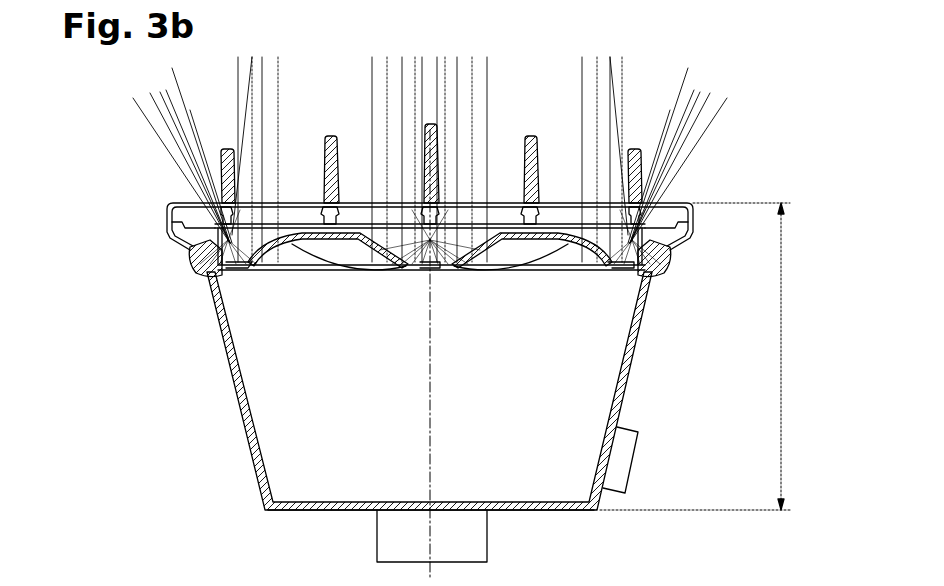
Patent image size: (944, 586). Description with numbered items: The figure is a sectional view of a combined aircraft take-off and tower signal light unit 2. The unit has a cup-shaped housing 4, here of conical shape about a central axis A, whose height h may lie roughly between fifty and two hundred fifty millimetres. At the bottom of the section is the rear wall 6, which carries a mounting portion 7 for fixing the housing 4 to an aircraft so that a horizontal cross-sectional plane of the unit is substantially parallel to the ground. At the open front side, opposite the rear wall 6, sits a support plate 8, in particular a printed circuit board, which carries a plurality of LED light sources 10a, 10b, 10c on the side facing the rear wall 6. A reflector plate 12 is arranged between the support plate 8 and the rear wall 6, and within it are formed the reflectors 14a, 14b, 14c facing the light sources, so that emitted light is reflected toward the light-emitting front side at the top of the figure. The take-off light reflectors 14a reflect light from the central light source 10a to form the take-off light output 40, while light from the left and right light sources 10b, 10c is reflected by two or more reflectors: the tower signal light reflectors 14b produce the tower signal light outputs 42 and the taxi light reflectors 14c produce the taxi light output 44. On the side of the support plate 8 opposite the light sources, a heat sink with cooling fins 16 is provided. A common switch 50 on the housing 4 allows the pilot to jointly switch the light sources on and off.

The combined aircraft take-off and tower signal light unit 2 is at (812, 67).
The housing 4 is at (236, 464).
The rear wall 6 is at (306, 512).
The mounting portion 7 is at (489, 560).
The support plate 8 is at (508, 200).
The light source 10a is at (430, 272).
The light source 10b is at (246, 272).
The light source 10c is at (656, 272).
The reflector plate 12 is at (376, 282).
The take-off light reflector 14a is at (480, 272).
The tower signal light reflector 14b is at (186, 252).
The taxi light reflector 14c is at (292, 272).
The cooling fins 16 is at (222, 138).
The take-off light output 40 is at (460, 46).
The tower signal light output 42 is at (136, 132).
The taxi light output 44 is at (262, 46).
The common switch 50 is at (634, 461).
The axis A is at (428, 410).
The height h is at (704, 356).